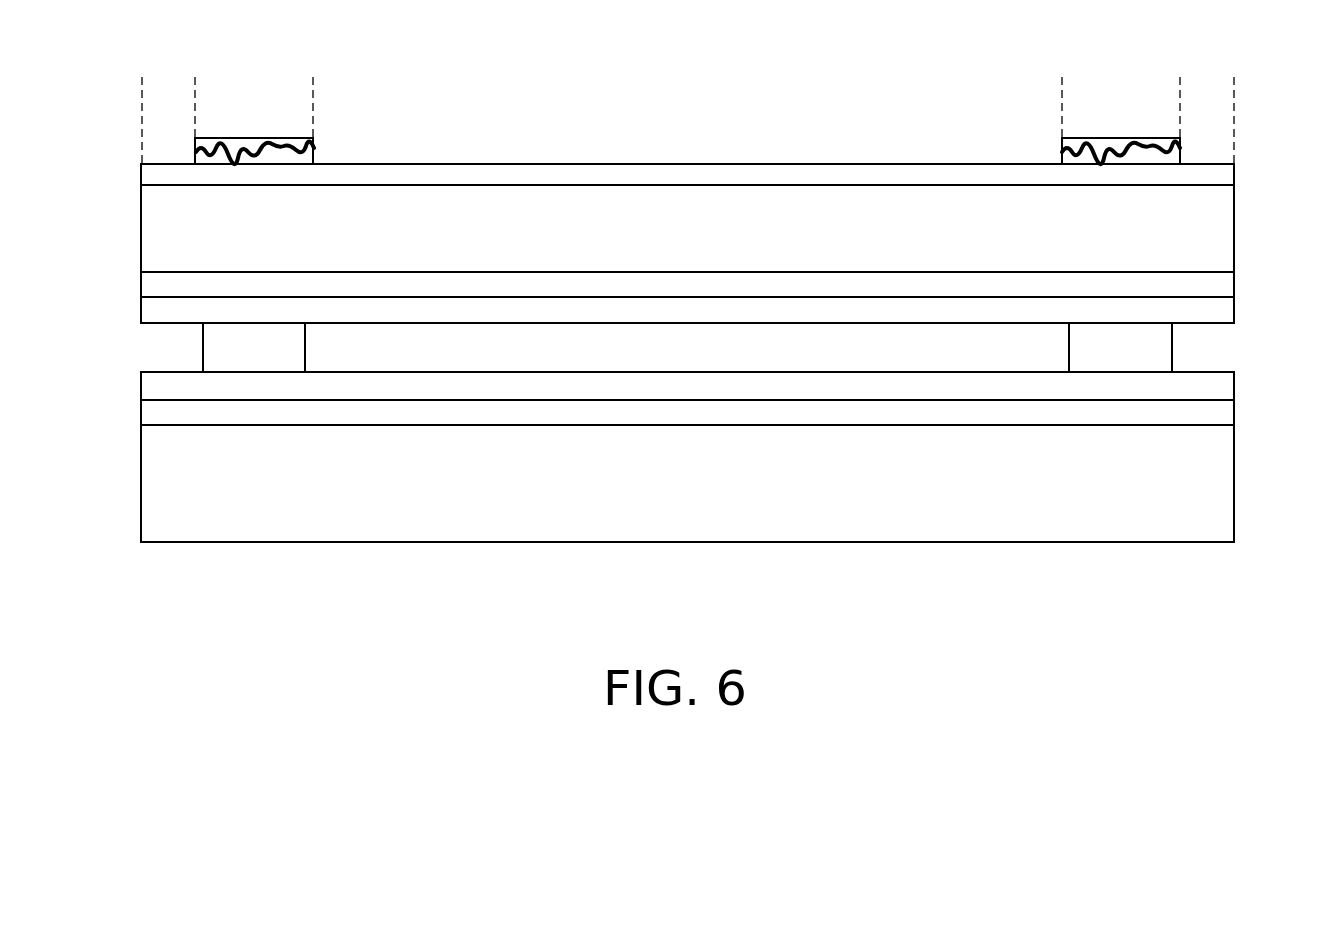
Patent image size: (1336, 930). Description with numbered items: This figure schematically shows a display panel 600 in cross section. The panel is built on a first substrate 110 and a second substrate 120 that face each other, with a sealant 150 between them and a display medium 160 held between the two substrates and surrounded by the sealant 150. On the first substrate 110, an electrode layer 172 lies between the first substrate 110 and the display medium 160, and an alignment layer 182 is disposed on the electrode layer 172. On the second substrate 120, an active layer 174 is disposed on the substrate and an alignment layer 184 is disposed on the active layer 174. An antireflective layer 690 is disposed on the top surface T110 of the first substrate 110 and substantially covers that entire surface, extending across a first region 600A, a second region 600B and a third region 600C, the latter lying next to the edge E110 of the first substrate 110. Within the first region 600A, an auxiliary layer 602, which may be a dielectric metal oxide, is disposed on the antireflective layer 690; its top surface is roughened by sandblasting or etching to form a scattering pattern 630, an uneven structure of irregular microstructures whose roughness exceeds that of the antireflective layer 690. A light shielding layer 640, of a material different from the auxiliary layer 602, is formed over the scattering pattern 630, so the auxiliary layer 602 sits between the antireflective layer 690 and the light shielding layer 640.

The display panel 600 is at (1313, 631).
The first region 600A is at (313, 81).
The second region 600B is at (1062, 81).
The third region 600C is at (195, 81).
The auxiliary layer 602 is at (1062, 160).
The scattering pattern 630 is at (1113, 150).
The light shielding layer 640 is at (1165, 140).
The antireflective layer 690 is at (682, 177).
The first substrate 110 is at (838, 198).
The edge of first substrate E110 is at (1234, 203).
The top surface of first substrate T110 is at (987, 187).
The electrode layer 172 is at (1222, 285).
The alignment layer 182 is at (1227, 310).
The sealant 150 is at (1158, 357).
The alignment layer 184 is at (1213, 386).
The active layer 174 is at (1218, 412).
The second substrate 120 is at (1212, 499).
The display medium 160 is at (995, 356).